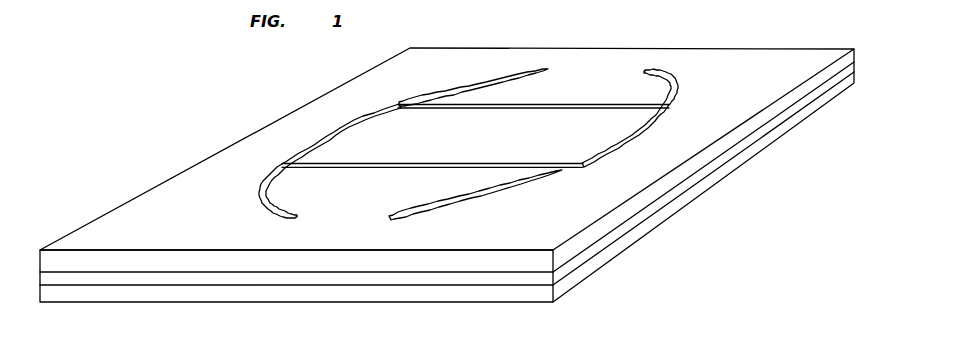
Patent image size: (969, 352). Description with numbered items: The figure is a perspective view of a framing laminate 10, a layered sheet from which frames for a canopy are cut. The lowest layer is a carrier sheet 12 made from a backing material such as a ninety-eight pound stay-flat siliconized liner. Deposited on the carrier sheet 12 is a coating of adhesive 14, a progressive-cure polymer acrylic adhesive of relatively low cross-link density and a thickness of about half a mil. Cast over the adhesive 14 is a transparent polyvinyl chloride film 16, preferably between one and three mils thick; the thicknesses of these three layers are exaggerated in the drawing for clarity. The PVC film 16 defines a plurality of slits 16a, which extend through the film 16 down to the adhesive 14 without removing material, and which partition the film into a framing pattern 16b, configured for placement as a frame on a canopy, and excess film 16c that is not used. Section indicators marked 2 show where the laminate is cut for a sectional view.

The framing laminate 10 is at (256, 78).
The carrier sheet 12 is at (415, 295).
The adhesive coating 14 is at (505, 278).
The PVC film 16 is at (469, 189).
The slits 16a is at (527, 109).
The framing pattern 16b is at (281, 157).
The excess film 16c is at (792, 76).
The section line 2- 2 is at (204, 131).